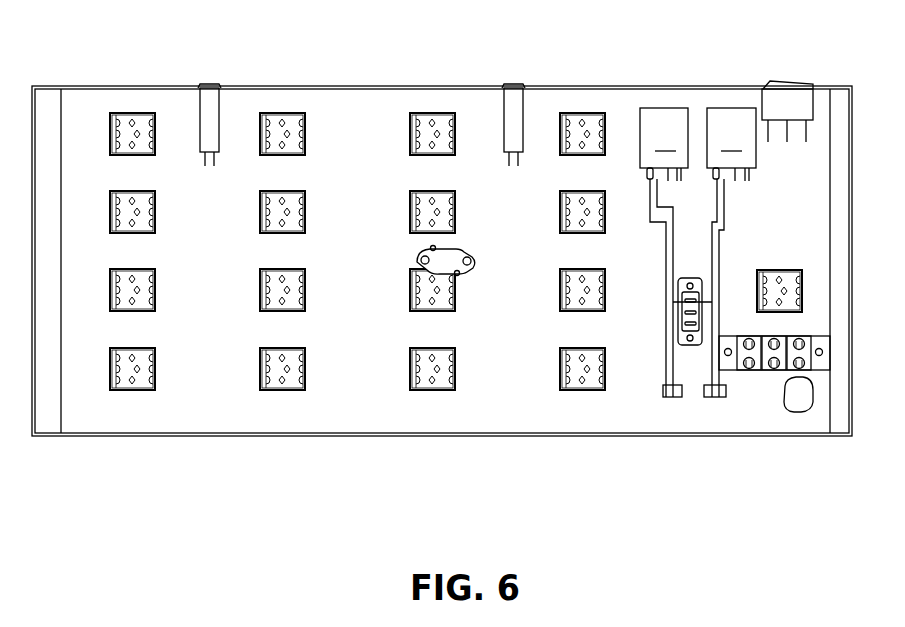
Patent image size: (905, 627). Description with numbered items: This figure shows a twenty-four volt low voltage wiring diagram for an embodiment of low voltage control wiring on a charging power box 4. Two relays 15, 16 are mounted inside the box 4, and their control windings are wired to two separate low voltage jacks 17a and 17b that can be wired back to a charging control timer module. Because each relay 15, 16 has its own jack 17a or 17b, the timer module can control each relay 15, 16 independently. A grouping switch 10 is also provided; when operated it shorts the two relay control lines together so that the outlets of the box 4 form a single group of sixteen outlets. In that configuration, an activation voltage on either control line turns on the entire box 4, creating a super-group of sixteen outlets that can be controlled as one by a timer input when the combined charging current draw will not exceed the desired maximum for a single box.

The charging power box 4 is at (387, 103).
The grouping switch 10 is at (698, 292).
The relay 15 is at (664, 246).
The relay 16 is at (731, 246).
The low voltage jack 17a is at (677, 397).
The low voltage jack 17b is at (716, 397).